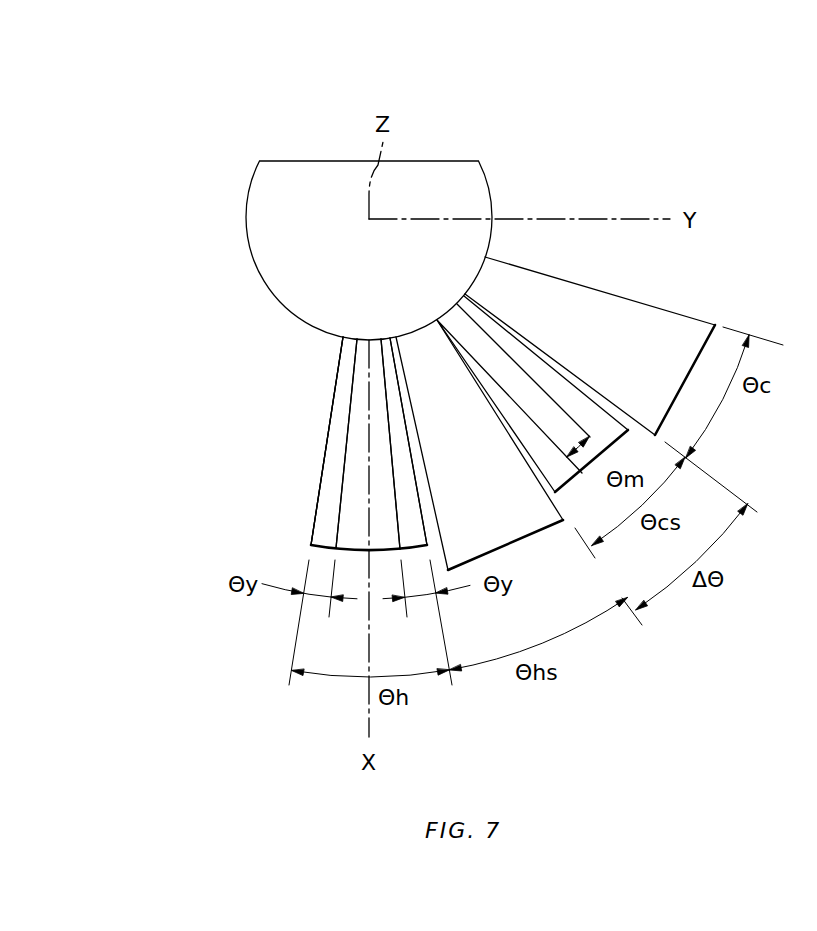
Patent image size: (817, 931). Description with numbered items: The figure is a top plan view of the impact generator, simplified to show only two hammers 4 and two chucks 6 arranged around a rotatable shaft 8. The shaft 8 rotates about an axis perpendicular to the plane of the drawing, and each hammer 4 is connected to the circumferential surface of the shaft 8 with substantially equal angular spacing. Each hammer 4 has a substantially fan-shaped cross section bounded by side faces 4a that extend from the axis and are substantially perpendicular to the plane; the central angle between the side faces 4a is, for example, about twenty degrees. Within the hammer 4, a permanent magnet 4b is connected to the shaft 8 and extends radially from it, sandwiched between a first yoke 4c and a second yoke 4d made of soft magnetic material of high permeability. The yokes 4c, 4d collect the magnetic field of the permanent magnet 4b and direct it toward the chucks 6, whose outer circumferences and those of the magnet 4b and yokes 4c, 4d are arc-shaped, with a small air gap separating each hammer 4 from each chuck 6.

The shaft 8 is at (262, 222).
The hammer 4 is at (342, 480).
The side face 4a is at (328, 437).
The permanent magnet 4b is at (352, 528).
The first yoke 4c is at (340, 417).
The second yoke 4d is at (393, 382).
The chuck 6 is at (494, 512).